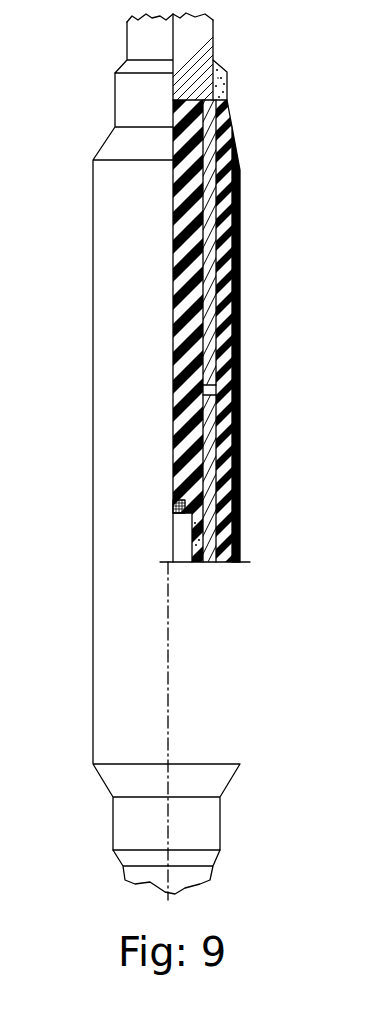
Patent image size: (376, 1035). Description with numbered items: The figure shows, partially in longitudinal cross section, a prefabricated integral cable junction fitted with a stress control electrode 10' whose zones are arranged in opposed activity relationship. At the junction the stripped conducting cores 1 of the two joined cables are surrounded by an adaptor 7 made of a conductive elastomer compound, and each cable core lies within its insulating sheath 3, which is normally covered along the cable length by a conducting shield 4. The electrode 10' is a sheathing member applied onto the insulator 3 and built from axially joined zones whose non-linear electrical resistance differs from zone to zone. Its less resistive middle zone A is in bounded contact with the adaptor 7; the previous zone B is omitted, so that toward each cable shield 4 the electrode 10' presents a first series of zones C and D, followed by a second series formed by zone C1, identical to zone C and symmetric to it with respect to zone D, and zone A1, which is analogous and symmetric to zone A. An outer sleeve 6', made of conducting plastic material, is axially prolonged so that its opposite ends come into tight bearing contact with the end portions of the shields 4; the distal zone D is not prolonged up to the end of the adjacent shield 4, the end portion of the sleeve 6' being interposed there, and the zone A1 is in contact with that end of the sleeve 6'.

The conducting shield 4 is at (190, 72).
The zone A1 is at (180, 196).
The zone C1 is at (210, 243).
The zone D is at (187, 339).
The zone C is at (183, 418).
The insulating sheath 3 is at (180, 452).
The stripped conducting cores 1 is at (170, 508).
The zone A is at (178, 527).
The adaptor 7 is at (192, 556).
The outer sleeve 6' is at (263, 344).
The stress control electrode 10' is at (251, 408).